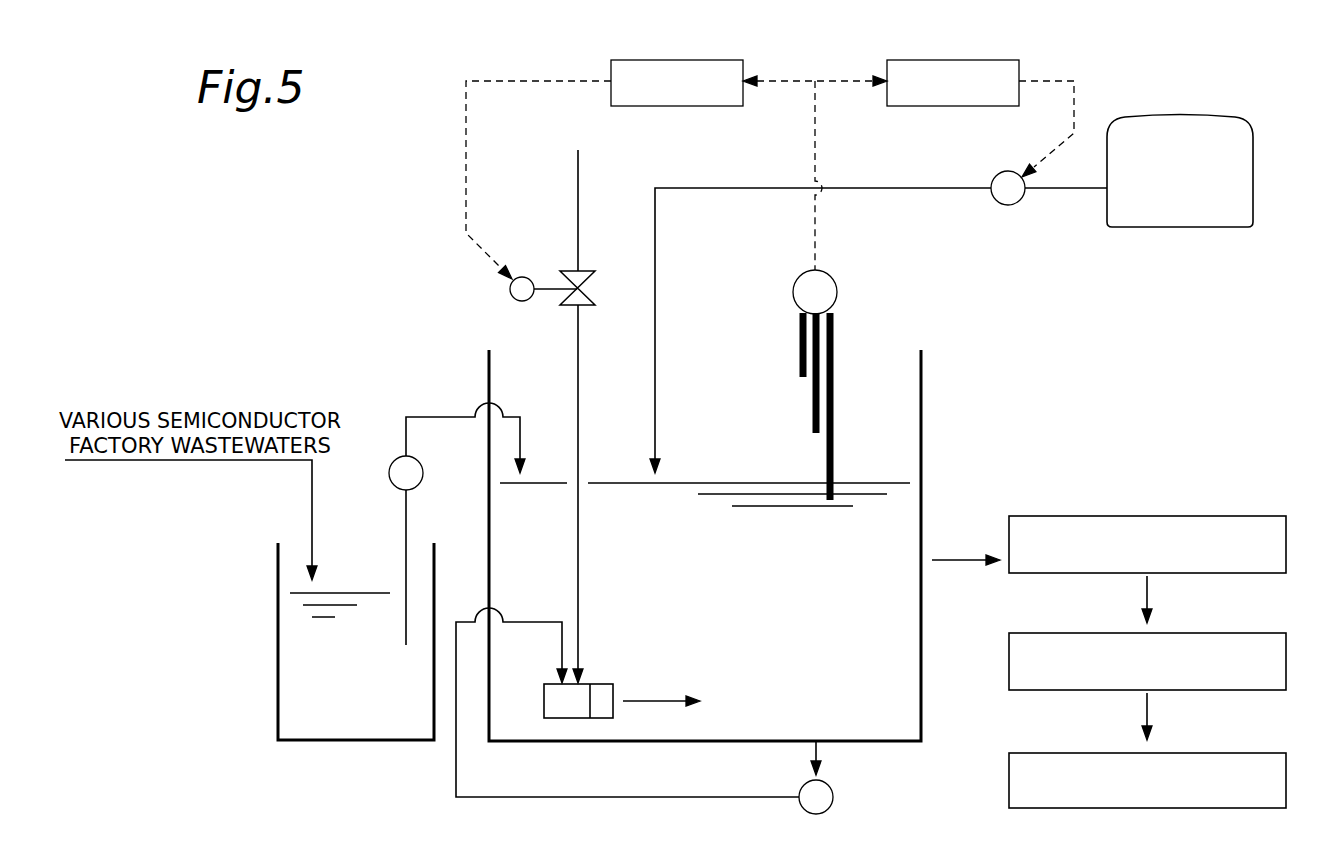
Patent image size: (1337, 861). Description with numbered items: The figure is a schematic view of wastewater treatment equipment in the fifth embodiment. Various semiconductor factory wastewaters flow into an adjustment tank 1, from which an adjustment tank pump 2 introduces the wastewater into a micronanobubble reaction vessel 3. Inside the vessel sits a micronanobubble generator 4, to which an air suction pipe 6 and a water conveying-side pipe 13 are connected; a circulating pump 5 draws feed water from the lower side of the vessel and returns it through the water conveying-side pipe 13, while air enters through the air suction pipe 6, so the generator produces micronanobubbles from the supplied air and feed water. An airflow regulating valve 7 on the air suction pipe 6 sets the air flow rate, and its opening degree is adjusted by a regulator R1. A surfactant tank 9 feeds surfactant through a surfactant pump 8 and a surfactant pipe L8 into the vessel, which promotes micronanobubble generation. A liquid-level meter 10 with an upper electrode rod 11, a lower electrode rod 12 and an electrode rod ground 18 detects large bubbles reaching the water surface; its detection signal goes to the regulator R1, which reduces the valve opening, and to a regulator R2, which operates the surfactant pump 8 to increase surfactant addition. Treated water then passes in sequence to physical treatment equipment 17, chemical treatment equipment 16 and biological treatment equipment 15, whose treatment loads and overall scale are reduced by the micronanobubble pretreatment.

The adjustment tank 1 is at (300, 742).
The adjustment tank pump 2 is at (390, 470).
The micronanobubble reaction vessel 3 is at (921, 706).
The micronanobubble generator 4 is at (601, 683).
The circulating pump 5 is at (833, 797).
The air suction pipe 6 is at (578, 205).
The airflow regulating valve 7 is at (550, 286).
The surfactant pump 8 is at (1010, 206).
The surfactant tank 9 is at (1170, 114).
The liquid-level meter 10 is at (838, 293).
The upper electrode rod 11 is at (798, 340).
The lower electrode rod 12 is at (812, 405).
The water conveying-side pipe 13 is at (540, 798).
The biological treatment equipment 15 is at (1066, 752).
The chemical treatment equipment 16 is at (1066, 632).
The physical treatment equipment 17 is at (1066, 515).
The electrode rod ground 18 is at (835, 372).
The surfactant pipe L8 is at (862, 190).
The regulator R1 is at (636, 58).
The regulator R2 is at (917, 58).